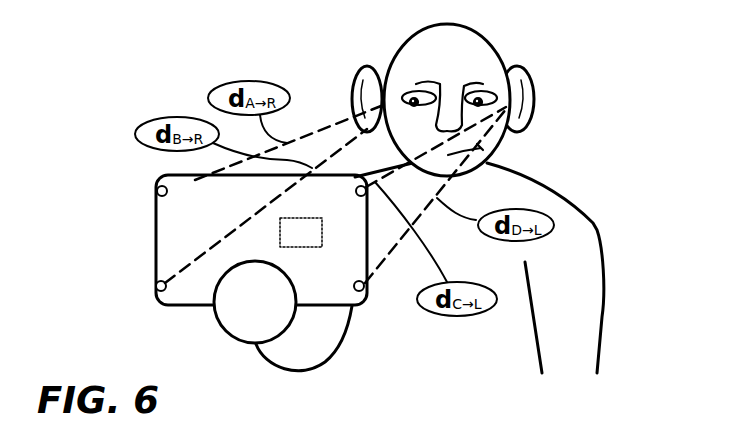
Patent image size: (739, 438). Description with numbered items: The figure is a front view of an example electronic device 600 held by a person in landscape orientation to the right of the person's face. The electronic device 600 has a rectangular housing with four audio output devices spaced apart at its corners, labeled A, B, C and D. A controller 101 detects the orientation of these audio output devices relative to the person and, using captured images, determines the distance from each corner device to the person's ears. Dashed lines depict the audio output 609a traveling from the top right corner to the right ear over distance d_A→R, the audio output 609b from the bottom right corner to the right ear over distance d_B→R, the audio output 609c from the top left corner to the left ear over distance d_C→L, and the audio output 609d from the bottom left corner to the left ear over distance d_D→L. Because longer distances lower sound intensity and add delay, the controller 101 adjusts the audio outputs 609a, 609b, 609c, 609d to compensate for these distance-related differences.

The electronic device 600 is at (191, 312).
The controller 101 is at (316, 244).
The audio output 609a is at (320, 128).
The audio output 609b is at (222, 233).
The audio output 609c is at (393, 173).
The audio output 609d is at (380, 272).